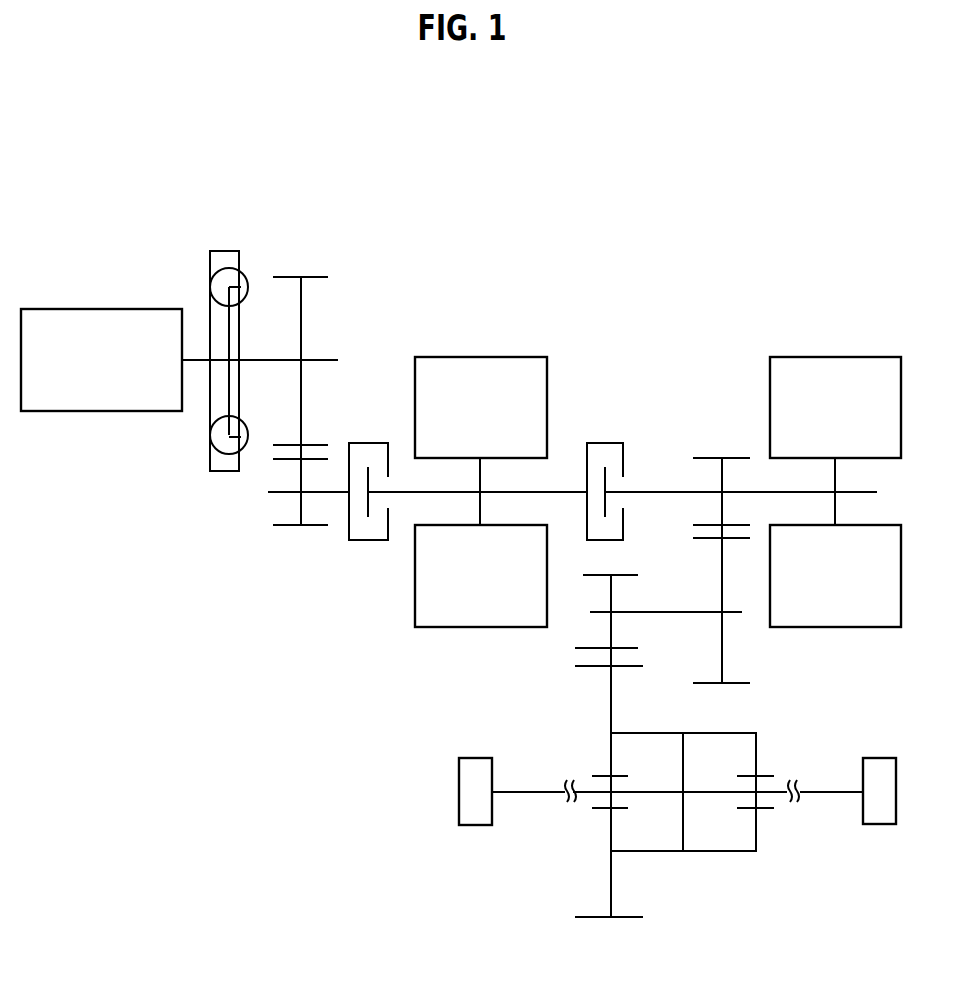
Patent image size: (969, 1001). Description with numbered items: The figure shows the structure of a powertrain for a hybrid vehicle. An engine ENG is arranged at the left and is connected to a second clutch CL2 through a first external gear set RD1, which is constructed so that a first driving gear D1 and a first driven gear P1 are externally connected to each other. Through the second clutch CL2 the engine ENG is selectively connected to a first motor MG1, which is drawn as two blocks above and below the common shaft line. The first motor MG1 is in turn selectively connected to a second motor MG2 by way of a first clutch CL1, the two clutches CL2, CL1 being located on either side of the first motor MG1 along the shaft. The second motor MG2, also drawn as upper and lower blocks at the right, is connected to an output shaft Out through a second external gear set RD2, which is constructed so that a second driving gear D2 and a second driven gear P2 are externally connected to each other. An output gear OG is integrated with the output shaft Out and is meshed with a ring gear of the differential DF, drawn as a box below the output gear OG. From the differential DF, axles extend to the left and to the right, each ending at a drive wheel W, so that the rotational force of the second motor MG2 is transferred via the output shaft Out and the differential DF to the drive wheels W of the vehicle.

The engine ENG is at (101, 360).
The first external gear set RD1 is at (342, 185).
The first driving gear D1 is at (315, 277).
The first driven gear P1 is at (313, 457).
The second clutch CL2 is at (369, 474).
The first motor MG1 is at (481, 492).
The first clutch CL1 is at (605, 474).
The second external gear set RD2 is at (643, 370).
The second driven gear P2 is at (690, 538).
The second driving gear D2 is at (701, 457).
The second motor MG2 is at (835, 492).
The output gear OG is at (577, 648).
The output shaft Out is at (730, 613).
The differential DF is at (709, 856).
The drive wheels W is at (475, 808).